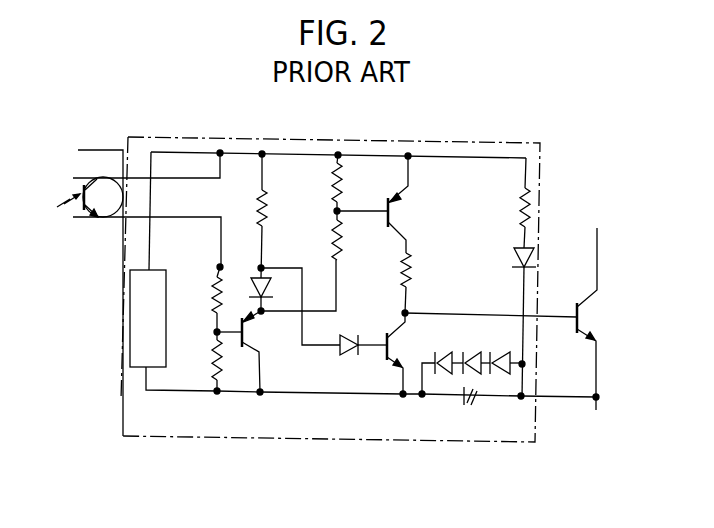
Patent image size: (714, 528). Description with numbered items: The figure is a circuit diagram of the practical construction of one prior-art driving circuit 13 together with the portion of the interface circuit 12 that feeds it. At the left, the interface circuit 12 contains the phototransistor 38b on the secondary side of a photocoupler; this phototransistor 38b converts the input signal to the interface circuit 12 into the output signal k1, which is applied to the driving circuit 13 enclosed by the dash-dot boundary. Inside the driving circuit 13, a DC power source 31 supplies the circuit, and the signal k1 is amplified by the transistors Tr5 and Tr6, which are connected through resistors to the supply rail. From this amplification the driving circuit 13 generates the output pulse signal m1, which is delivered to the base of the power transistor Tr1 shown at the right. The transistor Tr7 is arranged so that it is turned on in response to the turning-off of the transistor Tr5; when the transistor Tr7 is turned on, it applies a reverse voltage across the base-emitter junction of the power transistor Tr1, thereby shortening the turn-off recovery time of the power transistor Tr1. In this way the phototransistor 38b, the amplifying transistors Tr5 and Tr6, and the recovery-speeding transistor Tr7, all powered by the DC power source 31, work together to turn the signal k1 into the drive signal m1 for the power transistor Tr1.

The interface circuit 12 is at (95, 153).
The driving circuit 13 is at (468, 140).
The DC power source 31 is at (166, 284).
The phototransistor 38b is at (83, 218).
The output signal k1 is at (147, 210).
The output pulse signal m1 is at (491, 305).
The power transistor Tr1 is at (593, 319).
The transistor Tr5 is at (247, 337).
The transistor Tr6 is at (398, 219).
The transistor Tr7 is at (389, 351).